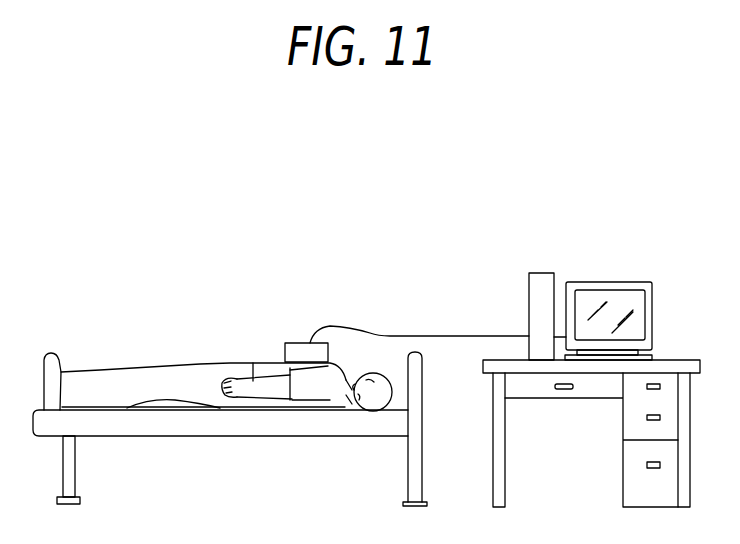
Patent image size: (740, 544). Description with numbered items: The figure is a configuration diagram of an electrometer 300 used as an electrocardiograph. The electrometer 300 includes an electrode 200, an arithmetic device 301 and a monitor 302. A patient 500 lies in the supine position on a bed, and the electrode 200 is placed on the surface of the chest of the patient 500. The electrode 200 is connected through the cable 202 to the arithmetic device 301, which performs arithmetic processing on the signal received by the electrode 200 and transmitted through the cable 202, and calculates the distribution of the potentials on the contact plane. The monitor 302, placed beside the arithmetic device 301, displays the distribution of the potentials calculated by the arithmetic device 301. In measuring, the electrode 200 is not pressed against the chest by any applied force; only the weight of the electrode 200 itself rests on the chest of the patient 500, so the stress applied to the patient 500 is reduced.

The electrode 200 is at (295, 336).
The cable 202 is at (383, 335).
The electrometer 300 is at (620, 197).
The arithmetic device 301 is at (541, 273).
The monitor 302 is at (600, 282).
The patient 500 is at (168, 375).